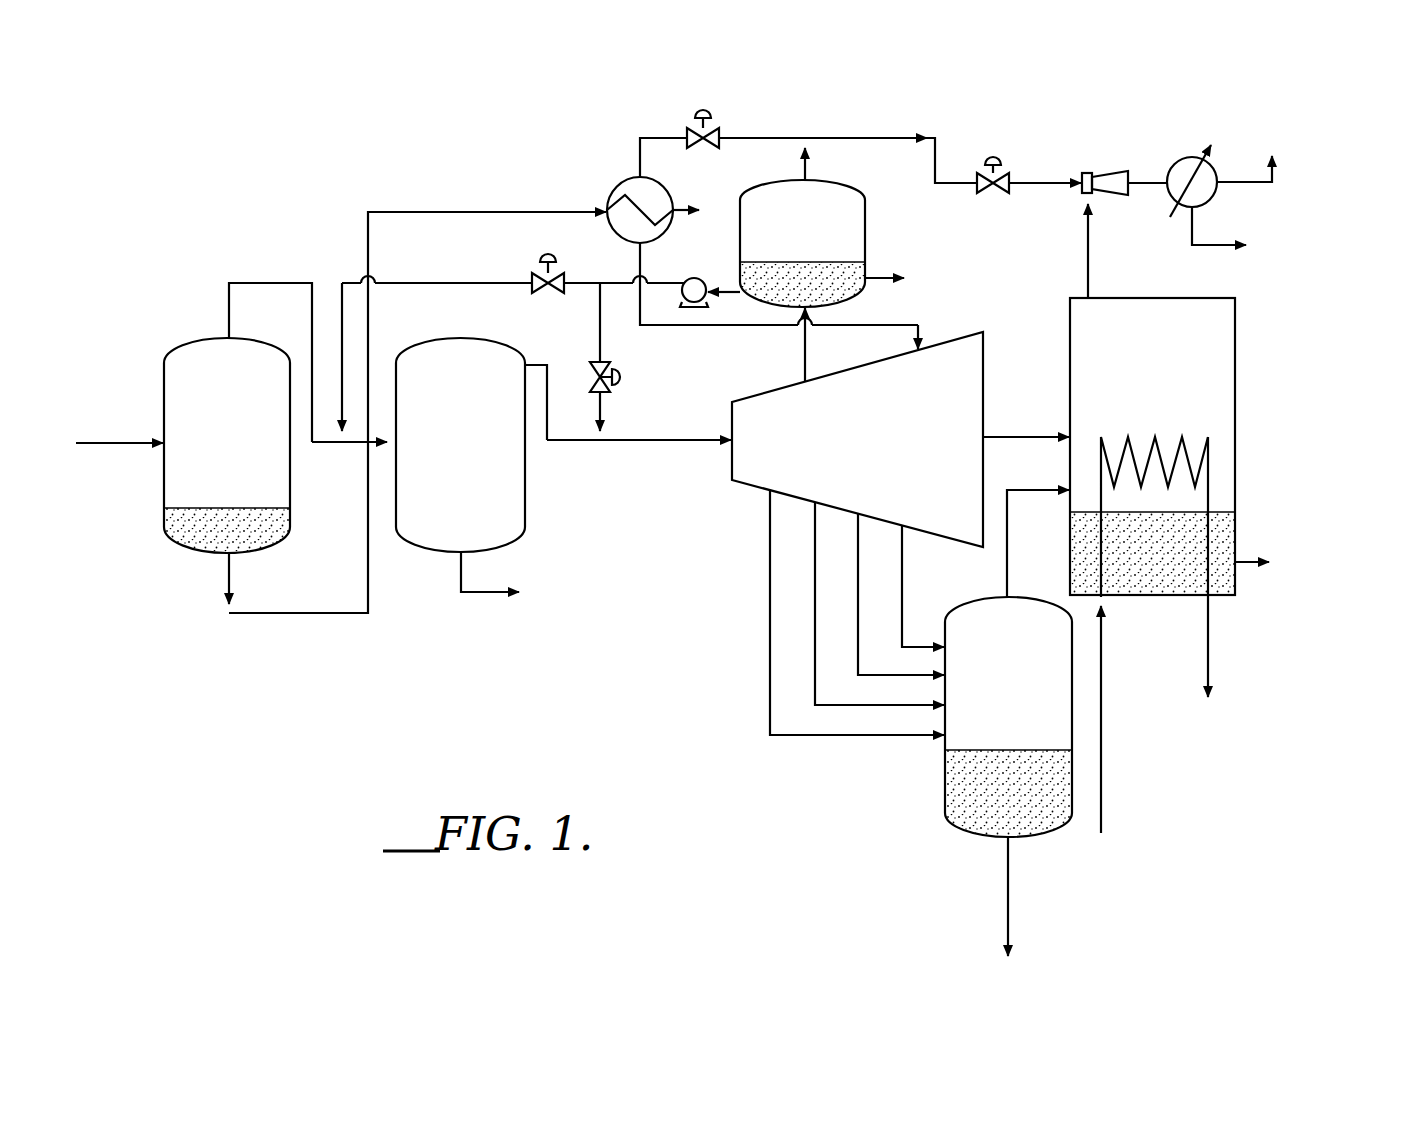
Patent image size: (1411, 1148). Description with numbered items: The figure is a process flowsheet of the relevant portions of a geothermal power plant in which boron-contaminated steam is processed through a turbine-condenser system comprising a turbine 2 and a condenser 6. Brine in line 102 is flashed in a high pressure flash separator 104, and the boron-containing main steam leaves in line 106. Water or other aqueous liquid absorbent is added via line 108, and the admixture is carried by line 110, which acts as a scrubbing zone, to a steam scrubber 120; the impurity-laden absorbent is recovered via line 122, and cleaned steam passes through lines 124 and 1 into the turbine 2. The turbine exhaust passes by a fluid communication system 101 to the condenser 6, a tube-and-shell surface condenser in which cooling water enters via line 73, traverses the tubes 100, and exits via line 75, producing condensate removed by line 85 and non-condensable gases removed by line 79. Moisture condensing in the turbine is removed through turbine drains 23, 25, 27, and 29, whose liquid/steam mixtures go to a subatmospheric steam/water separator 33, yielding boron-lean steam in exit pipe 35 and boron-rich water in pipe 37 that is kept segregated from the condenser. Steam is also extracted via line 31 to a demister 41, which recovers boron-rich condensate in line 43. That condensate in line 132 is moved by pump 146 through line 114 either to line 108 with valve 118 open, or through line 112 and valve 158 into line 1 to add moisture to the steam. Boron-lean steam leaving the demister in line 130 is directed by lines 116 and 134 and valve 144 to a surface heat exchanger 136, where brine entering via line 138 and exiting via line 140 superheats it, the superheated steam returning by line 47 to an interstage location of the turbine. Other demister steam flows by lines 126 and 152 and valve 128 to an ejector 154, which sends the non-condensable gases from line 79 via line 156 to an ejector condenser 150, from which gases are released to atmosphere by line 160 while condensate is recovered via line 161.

The line 1 is at (657, 443).
The turbine 2 is at (857, 439).
The condenser 6 is at (1155, 402).
The turbine drain 23 is at (770, 548).
The turbine drain 25 is at (815, 575).
The turbine drain 27 is at (858, 600).
The turbine drain 29 is at (905, 587).
The steam extraction line 31 is at (803, 357).
The steam/water separator 33 is at (940, 748).
The exit pipe 35 is at (1010, 575).
The pipe 37 is at (1005, 872).
The demister 41 is at (868, 220).
The line 43 is at (888, 275).
The line 47 is at (880, 327).
The line 73 is at (1105, 672).
The line 75 is at (1210, 655).
The line 79 is at (1090, 272).
The line 85 is at (1248, 560).
The tubes 100 is at (1158, 438).
The fluid communication system 101 is at (1027, 433).
The line 102 is at (123, 448).
The high pressure flash separator 104 is at (244, 496).
The line 106 is at (260, 281).
The line 108 is at (350, 281).
The line 110 is at (356, 446).
The line 112 is at (602, 416).
The line 114 is at (658, 282).
The line 116 is at (750, 138).
The valve 118 is at (540, 258).
The steam scrubber 120 is at (478, 503).
The line 122 is at (470, 596).
The line 124 is at (545, 362).
The line 126 is at (872, 138).
The valve 128 is at (995, 160).
The line 130 is at (806, 165).
The line 132 is at (722, 296).
The line 134 is at (638, 152).
The surface heat exchanger 136 is at (616, 190).
The line 138 is at (485, 212).
The line 140 is at (678, 215).
The valve 144 is at (697, 112).
The pump 146 is at (677, 311).
The ejector condenser 150 is at (1165, 207).
The line 152 is at (1055, 182).
The ejector 154 is at (1115, 170).
The line 156 is at (1150, 182).
The valve 158 is at (628, 378).
The line 160 is at (1274, 166).
The line 161 is at (1215, 250).